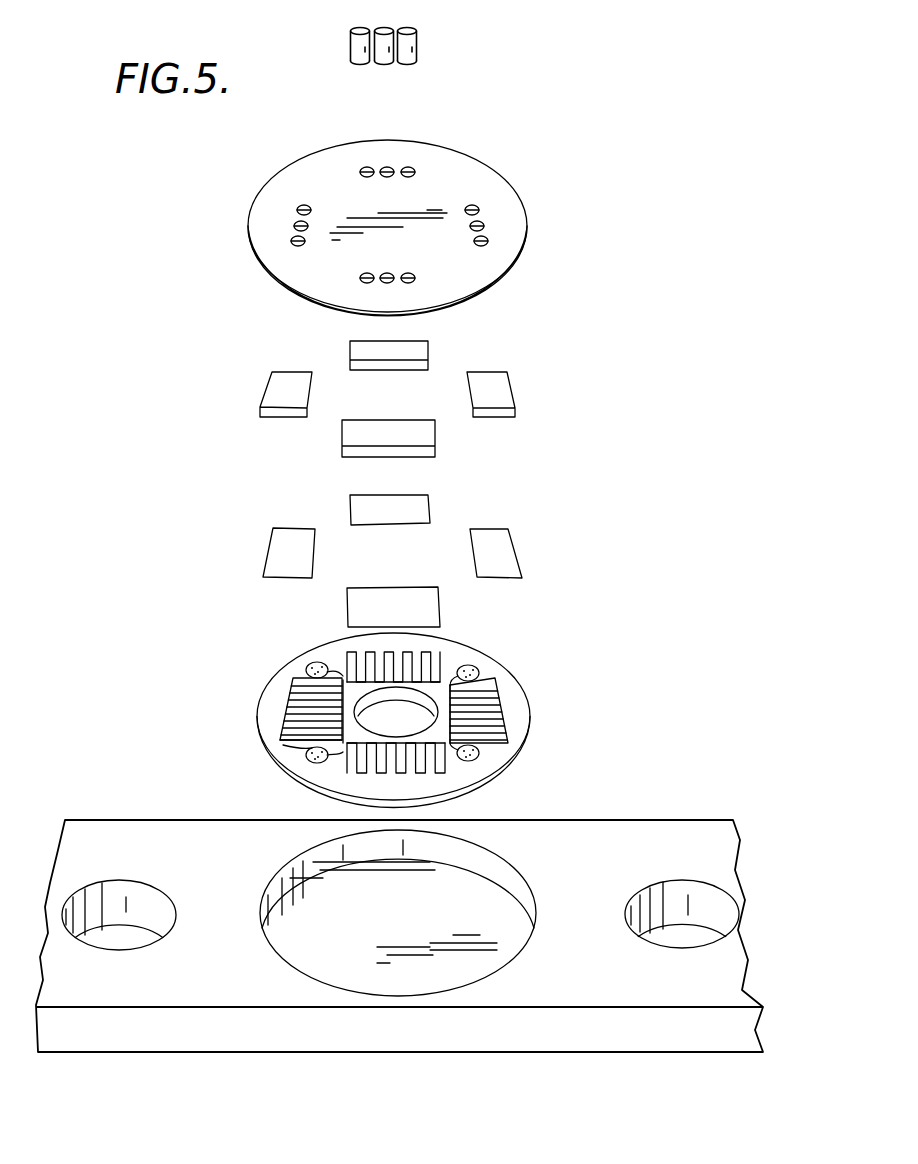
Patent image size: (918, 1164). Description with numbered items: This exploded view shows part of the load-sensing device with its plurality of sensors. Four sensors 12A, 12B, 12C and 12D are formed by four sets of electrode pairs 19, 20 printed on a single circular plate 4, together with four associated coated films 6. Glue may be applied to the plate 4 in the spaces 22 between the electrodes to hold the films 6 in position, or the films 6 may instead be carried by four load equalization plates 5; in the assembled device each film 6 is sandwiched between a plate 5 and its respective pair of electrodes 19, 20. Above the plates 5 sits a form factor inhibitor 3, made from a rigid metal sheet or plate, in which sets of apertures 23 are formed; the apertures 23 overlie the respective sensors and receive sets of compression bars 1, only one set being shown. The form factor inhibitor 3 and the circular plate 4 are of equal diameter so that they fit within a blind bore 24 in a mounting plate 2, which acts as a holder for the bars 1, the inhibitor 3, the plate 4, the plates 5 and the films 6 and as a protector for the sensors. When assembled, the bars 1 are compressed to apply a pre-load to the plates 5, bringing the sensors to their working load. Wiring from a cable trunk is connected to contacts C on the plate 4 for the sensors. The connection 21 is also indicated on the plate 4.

The compression bars 1 is at (400, 32).
The mounting plate 2 is at (558, 850).
The form factor inhibitor 3 is at (527, 225).
The circular plate 4 is at (530, 710).
The load equalization plates 5 is at (497, 397).
The coated films 6 is at (498, 550).
The sensor 12A is at (254, 716).
The sensor 12B is at (445, 636).
The sensor 12C is at (538, 702).
The sensor 12D is at (416, 777).
The electrode 19 is at (275, 748).
The electrode 20 is at (278, 727).
The connection 21 is at (498, 700).
The spaces 22 is at (292, 695).
The apertures 23 is at (476, 207).
The blind bore 24 is at (297, 872).
The contacts C is at (500, 753).